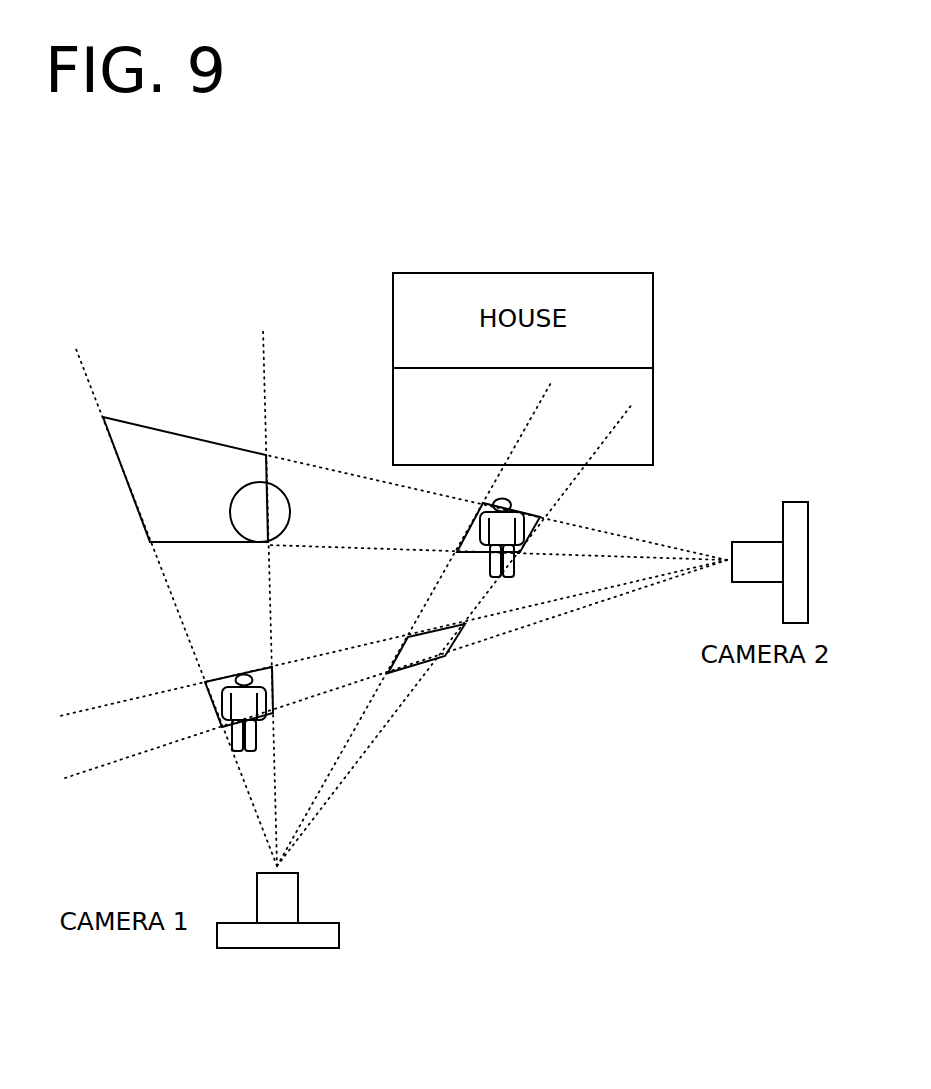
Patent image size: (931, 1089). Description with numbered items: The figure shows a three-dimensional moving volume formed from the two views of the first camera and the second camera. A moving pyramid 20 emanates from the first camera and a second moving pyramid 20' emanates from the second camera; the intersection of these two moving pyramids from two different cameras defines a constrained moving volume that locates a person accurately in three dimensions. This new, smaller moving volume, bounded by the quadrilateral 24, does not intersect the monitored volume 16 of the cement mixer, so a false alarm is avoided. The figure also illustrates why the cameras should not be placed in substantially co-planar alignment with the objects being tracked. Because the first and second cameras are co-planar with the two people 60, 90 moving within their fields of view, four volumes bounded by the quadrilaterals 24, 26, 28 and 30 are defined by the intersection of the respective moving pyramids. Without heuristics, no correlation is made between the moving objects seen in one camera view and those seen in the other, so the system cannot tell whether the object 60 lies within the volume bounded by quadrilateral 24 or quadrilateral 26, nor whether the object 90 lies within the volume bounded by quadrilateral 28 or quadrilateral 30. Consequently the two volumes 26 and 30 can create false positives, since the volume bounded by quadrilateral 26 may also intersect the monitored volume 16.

The monitored volume 16 is at (283, 537).
The moving pyramid 20 is at (147, 607).
The moving pyramid 20' is at (394, 719).
The quadrilateral 24 is at (217, 688).
The quadrilateral 26 is at (153, 503).
The quadrilateral 28 is at (545, 521).
The quadrilateral 30 is at (430, 652).
The person 60 is at (250, 753).
The person 90 is at (462, 541).